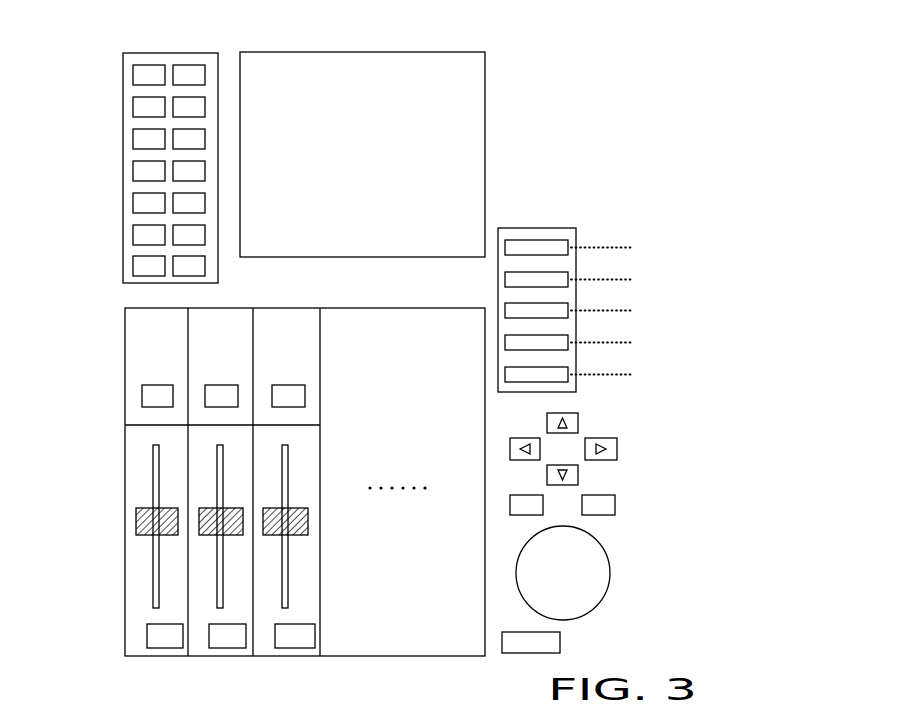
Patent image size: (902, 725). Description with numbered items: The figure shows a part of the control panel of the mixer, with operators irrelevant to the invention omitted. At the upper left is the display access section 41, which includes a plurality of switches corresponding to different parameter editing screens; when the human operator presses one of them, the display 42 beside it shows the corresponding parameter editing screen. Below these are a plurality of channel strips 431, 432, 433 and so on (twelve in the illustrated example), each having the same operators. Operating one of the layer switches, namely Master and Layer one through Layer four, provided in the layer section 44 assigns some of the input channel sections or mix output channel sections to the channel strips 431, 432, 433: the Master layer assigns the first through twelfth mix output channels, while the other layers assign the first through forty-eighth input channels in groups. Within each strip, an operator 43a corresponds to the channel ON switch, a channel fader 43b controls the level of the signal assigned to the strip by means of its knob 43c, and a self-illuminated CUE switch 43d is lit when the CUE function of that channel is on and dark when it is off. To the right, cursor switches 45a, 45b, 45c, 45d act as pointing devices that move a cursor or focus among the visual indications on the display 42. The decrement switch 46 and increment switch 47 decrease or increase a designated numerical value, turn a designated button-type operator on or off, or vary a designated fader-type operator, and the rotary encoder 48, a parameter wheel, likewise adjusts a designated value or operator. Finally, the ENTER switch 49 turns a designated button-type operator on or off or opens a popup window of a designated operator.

The display access section 41 is at (123, 76).
The display 42 is at (485, 60).
The channel strip 431 is at (168, 660).
The channel strip 432 is at (233, 660).
The channel strip 433 is at (300, 660).
The ch-ON operator 43a is at (143, 395).
The channel fader 43b is at (132, 462).
The knob of the channel fader 43c is at (138, 516).
The CUE switch 43d is at (147, 636).
The layer section 44 is at (572, 205).
The cursor switch 45a is at (578, 417).
The cursor switch 45b is at (617, 444).
The cursor switch 45c is at (578, 478).
The cursor switch 45d is at (520, 440).
The decrement switch 46 is at (516, 497).
The increment switch 47 is at (615, 500).
The rotary encoder 48 is at (601, 545).
The ENTER switch 49 is at (560, 641).